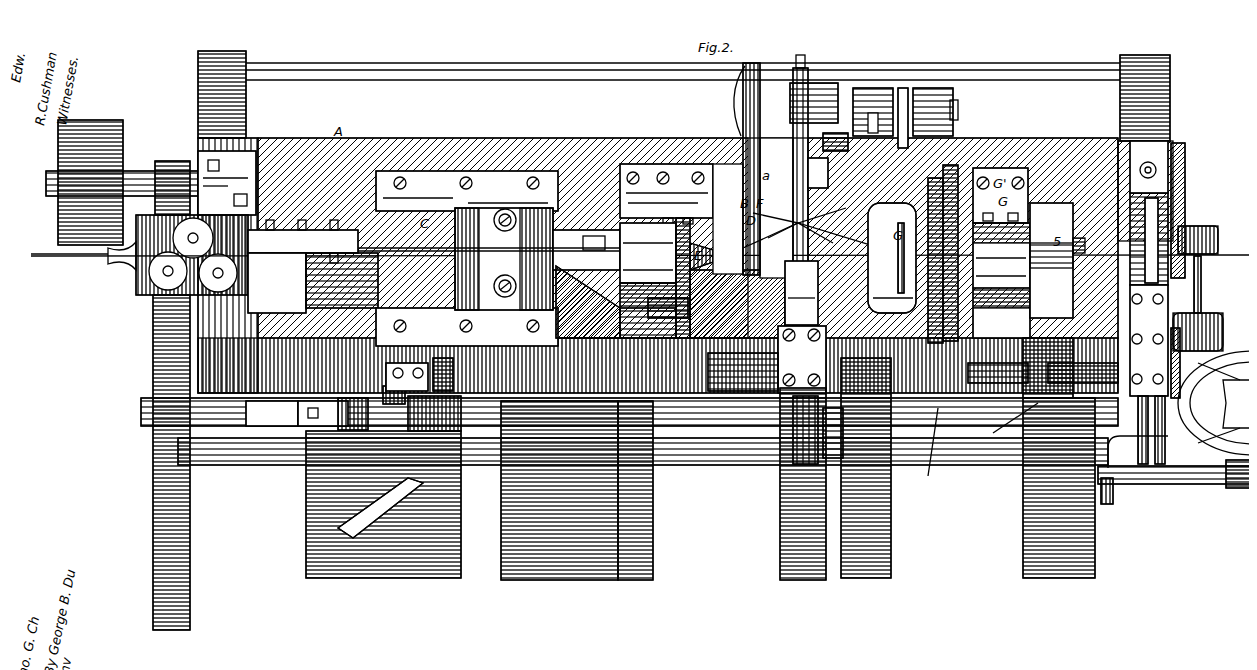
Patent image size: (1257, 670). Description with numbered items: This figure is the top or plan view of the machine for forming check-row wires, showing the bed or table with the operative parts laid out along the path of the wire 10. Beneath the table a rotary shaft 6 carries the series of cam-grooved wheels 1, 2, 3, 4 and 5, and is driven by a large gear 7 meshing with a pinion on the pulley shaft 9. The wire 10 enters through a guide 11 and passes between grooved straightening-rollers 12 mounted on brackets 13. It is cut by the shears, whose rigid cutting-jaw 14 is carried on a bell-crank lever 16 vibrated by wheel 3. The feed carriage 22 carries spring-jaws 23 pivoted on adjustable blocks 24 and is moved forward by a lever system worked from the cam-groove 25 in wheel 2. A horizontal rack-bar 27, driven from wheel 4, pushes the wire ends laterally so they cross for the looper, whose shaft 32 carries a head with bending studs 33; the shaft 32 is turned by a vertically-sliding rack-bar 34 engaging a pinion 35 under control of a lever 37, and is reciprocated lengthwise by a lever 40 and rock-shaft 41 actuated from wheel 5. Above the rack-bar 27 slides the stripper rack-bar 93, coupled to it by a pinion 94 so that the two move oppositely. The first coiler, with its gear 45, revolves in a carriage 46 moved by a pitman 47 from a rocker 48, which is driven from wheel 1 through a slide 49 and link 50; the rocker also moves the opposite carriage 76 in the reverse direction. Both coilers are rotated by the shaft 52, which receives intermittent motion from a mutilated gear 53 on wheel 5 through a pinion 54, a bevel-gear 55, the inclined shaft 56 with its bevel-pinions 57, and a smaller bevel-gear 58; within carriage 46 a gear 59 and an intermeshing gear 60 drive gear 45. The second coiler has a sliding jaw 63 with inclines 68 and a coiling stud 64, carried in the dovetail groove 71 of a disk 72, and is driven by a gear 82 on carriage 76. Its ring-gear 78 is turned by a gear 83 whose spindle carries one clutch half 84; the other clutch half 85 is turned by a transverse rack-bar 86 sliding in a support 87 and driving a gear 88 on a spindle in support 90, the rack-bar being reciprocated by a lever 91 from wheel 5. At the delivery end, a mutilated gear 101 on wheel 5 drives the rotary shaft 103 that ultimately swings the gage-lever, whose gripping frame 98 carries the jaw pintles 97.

The cam-grooved wheel 1 is at (383, 497).
The cam-grooved wheel 2 is at (559, 501).
The cam-grooved wheel 3 is at (803, 493).
The cam-grooved wheel 4 is at (866, 478).
The cam-grooved wheel 5 is at (1059, 468).
The rotary shaft 6 is at (133, 402).
The large gear 7 is at (177, 462).
The pulley shaft 9 is at (158, 188).
The wire 10 is at (640, 256).
The guide 11 is at (116, 259).
The straightening-rollers 12 is at (282, 270).
The brackets 13 is at (128, 285).
The rigid cutting-jaw 14 is at (751, 169).
The bell-crank lever 16 is at (721, 207).
The feed slide or carriage 22 is at (378, 240).
The spring-jaws 23 is at (489, 249).
The blocks 24 is at (524, 252).
The cam-groove 25 is at (625, 576).
The horizontal rack-bar 27 is at (728, 90).
The looper shaft 32 is at (795, 62).
The fingers or studs 33 is at (858, 150).
The vertically-sliding rack-bar 34 is at (834, 145).
The pinion 35 is at (800, 150).
The lever 37 is at (828, 266).
The lever 40 is at (880, 90).
The rock-shaft 41 is at (898, 85).
The gear 45 is at (673, 278).
The carriage 46 is at (666, 251).
The pitman 47 is at (450, 390).
The rocker 48 is at (380, 380).
The slide 49 is at (297, 413).
The link 50 is at (340, 425).
The shaft 52 is at (737, 304).
The mutilated gear 53 is at (1106, 480).
The pinion 54 is at (1057, 260).
The bevel-gear 55 is at (1190, 270).
The inclined rotary shaft 56 is at (1193, 278).
The bevel-pinions 57 is at (1209, 284).
The bevel-gear 58 is at (1213, 403).
The gear 59 is at (664, 339).
The intermeshing gear 60 is at (683, 307).
The sliding jaw 63 is at (908, 245).
The pin or stud 64 is at (743, 372).
The inclines 68 is at (920, 270).
The dovetail groove 71 is at (1056, 308).
The plate or disk 72 is at (937, 260).
The carriage 76 is at (1001, 280).
The ring-gear 78 is at (945, 158).
The gear 82 is at (1020, 307).
The gear 83 is at (929, 450).
The clutch half 84 is at (998, 373).
The clutch half 85 is at (1011, 426).
The transverse rack-bar 86 is at (1149, 239).
The support 87 is at (1149, 340).
The gear 88 is at (802, 359).
The support 90 is at (1083, 373).
The lever 91 is at (806, 428).
The stripper rack-bar 93 is at (795, 428).
The pinion 94 is at (1019, 361).
The pintles 97 is at (1138, 432).
The frame 98 is at (831, 433).
The mutilated gear 101 is at (1100, 496).
The rotary shaft 103 is at (1173, 479).